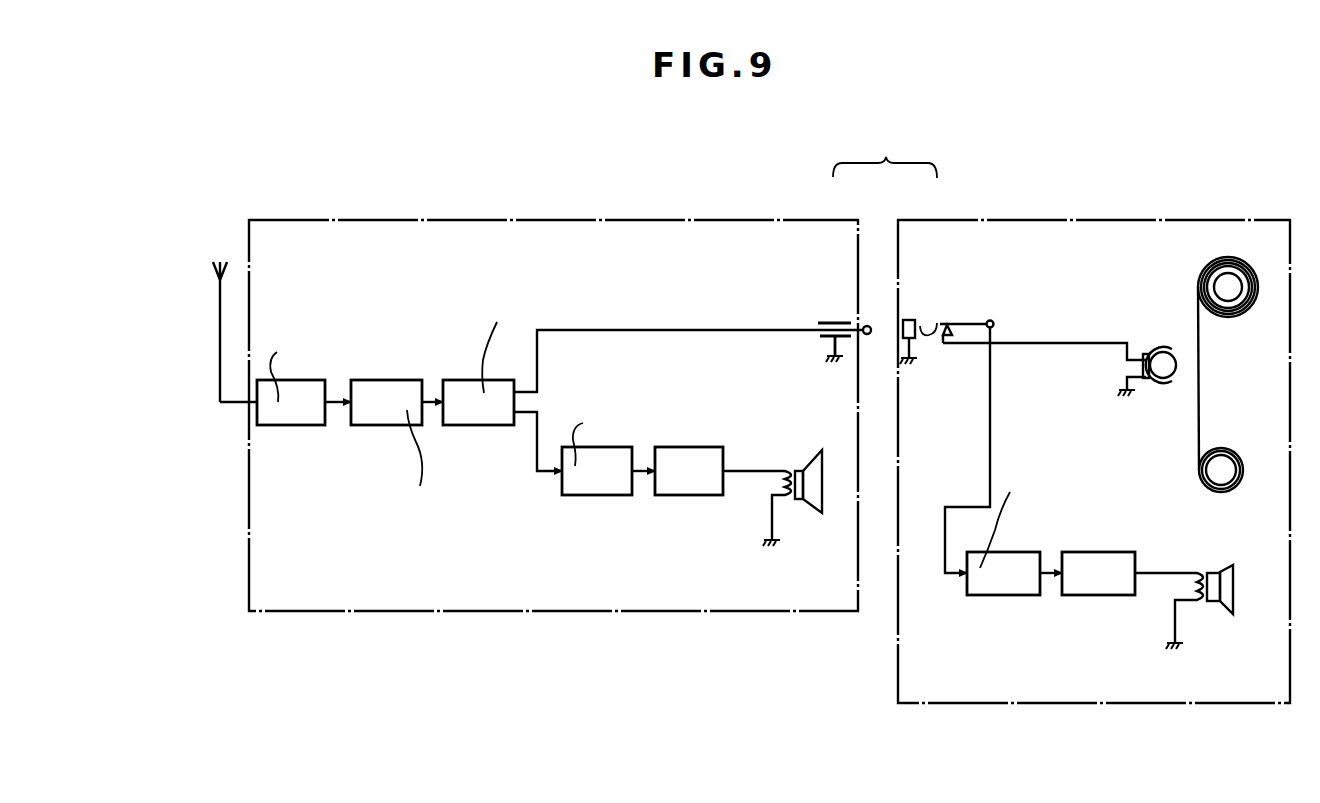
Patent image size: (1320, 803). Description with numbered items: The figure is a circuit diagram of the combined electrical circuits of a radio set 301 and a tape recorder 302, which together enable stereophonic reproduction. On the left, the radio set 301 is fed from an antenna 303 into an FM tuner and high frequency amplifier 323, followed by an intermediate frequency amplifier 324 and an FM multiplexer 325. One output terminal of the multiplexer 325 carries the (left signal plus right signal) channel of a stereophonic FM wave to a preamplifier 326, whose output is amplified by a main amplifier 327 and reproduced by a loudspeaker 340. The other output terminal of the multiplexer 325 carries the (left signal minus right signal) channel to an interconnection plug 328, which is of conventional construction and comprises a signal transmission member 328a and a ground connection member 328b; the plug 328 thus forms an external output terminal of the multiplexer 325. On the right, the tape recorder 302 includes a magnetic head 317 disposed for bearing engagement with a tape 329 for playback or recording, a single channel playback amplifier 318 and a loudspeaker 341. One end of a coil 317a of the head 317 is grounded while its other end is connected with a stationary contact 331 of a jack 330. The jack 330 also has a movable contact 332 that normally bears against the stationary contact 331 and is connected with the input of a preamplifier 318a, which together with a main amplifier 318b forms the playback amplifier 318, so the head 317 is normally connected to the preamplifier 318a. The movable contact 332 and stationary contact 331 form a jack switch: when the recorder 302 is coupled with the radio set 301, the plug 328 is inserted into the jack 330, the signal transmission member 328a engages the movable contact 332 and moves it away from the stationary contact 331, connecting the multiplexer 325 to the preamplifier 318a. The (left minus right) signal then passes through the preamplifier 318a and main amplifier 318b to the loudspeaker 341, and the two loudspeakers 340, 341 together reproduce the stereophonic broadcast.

The radio set 301 is at (605, 224).
The tape recorder 302 is at (1104, 182).
The antenna 303 is at (218, 320).
The FM tuner and high frequency amplifier 323 is at (297, 415).
The intermediate frequency amplifier 324 is at (400, 415).
The FM multiplexer 325 is at (492, 415).
The preamplifier 326 is at (602, 492).
The main amplifier 327 is at (692, 492).
The interconnection plug 328 is at (838, 262).
The signal transmission member 328a is at (868, 325).
The ground connection member 328b is at (822, 338).
The loudspeaker 340 is at (812, 513).
The jack 330 is at (1025, 333).
The stationary contact 331 is at (942, 336).
The movable contact 332 is at (937, 322).
The magnetic head 317 is at (1107, 391).
The coil 317a is at (1143, 365).
The tape 329 is at (1198, 418).
The single channel playback amplifier 318 is at (1051, 561).
The preamplifier 318a is at (1010, 597).
The main amplifier 318b is at (1110, 597).
The loudspeaker 341 is at (1220, 568).